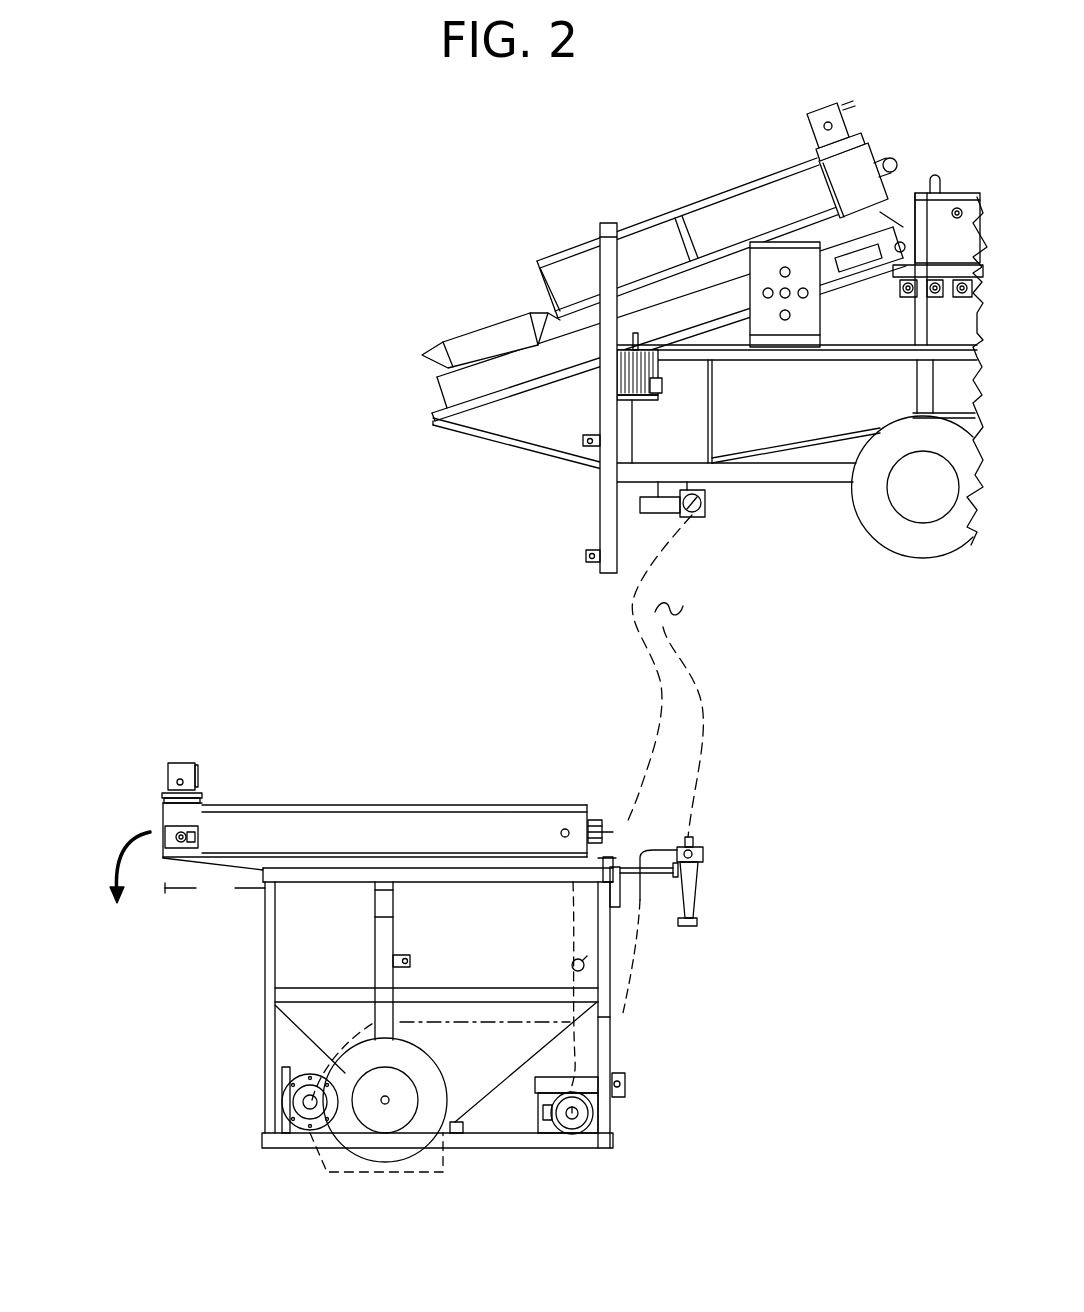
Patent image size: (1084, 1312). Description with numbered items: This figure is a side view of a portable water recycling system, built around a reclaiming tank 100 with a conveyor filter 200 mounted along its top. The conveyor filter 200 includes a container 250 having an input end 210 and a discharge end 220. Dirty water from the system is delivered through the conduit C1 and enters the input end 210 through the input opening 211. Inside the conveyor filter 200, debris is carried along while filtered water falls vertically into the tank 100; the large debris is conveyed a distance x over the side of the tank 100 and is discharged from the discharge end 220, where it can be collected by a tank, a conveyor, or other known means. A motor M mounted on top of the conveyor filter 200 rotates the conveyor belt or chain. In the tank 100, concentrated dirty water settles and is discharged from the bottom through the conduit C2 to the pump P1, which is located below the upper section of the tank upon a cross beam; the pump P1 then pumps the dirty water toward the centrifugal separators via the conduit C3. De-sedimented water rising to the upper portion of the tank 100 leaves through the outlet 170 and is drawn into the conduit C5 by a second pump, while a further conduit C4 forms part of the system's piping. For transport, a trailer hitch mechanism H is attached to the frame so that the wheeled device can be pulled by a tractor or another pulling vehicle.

The motor M is at (199, 755).
The conveyor filter 200 is at (356, 775).
The discharge end 220 is at (148, 815).
The container 250 is at (432, 820).
The input opening 211 is at (603, 822).
The input end 210 is at (579, 784).
The conduit C1 is at (632, 608).
The conduit C4 is at (703, 727).
The reclaiming tank 100 is at (443, 1034).
The outlet 170 is at (600, 950).
The conduit C3 is at (623, 1013).
The conduit C5 is at (577, 1047).
The pump P1 is at (280, 1099).
The trailer hitch mechanism H is at (633, 1082).
The conduit C2 is at (383, 1172).
The distance x is at (215, 888).